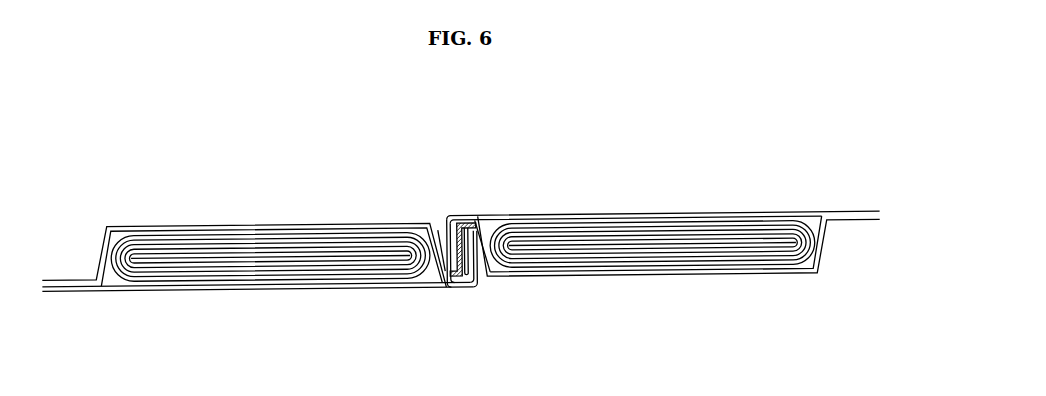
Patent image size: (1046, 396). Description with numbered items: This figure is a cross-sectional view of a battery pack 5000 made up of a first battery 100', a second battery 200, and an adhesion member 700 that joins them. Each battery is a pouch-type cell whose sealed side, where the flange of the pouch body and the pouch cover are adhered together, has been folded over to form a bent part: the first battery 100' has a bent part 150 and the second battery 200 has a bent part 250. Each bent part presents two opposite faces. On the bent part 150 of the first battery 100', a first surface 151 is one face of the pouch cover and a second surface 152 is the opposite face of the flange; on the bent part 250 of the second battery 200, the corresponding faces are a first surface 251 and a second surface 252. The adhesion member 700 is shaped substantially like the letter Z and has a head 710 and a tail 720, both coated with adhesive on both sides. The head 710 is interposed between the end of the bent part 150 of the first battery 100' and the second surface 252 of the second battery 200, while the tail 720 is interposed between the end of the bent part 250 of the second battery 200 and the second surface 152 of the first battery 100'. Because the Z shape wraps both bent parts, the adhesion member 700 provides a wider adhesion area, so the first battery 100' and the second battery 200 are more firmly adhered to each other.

The battery pack 5000 is at (50, 131).
The second battery 200 is at (273, 214).
The first battery 100' is at (663, 209).
The bent part 150 is at (397, 165).
The first surface 151 is at (432, 238).
The second surface 152 is at (463, 222).
The adhesion member 700 is at (474, 214).
The head 710 is at (447, 285).
The tail 720 is at (481, 236).
The bent part 250 is at (515, 345).
The first surface 251 is at (485, 282).
The second surface 252 is at (458, 285).